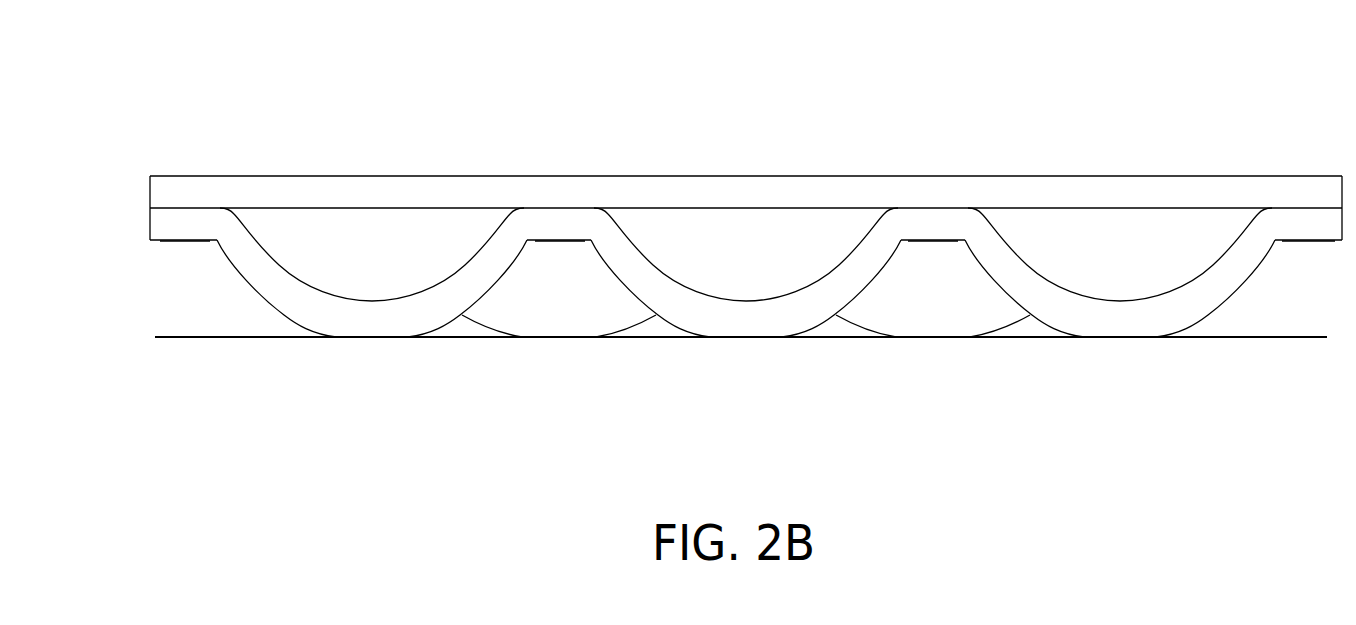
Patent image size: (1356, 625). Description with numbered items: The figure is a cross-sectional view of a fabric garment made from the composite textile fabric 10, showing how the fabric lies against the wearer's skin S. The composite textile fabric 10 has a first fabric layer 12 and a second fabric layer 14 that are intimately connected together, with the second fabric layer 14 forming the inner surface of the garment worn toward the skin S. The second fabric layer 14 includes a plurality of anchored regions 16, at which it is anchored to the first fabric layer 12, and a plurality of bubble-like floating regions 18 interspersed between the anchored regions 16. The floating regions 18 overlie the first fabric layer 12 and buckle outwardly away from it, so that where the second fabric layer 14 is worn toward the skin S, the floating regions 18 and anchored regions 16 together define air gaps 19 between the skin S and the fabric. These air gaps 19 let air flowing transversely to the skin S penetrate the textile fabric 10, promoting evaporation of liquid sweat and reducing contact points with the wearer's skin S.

The composite textile fabric 10 is at (147, 170).
The first fabric layer 12 is at (373, 176).
The second fabric layer 14 is at (163, 238).
The anchored regions 16 is at (577, 242).
The floating regions 18 is at (375, 317).
The air gaps 19 is at (214, 310).
The wearer's skin S is at (1223, 338).